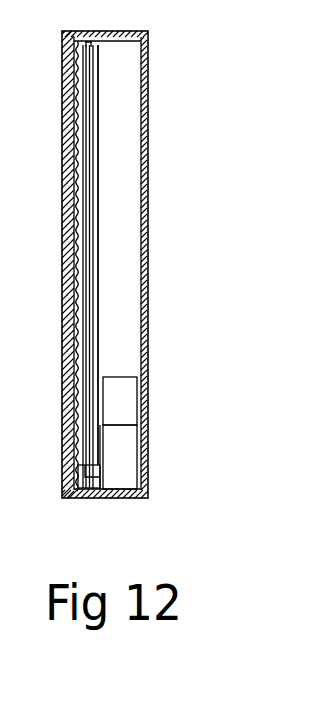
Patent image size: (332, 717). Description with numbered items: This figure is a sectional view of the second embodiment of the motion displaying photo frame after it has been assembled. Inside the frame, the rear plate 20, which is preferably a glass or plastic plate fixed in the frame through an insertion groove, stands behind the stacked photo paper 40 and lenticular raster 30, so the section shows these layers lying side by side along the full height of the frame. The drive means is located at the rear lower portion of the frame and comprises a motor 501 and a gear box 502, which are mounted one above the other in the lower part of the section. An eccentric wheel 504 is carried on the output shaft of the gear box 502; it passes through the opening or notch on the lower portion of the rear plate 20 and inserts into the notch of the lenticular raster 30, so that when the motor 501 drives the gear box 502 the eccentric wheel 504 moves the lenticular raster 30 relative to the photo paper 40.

The lenticular raster 30 is at (78, 55).
The photo paper 40 is at (93, 118).
The rear plate 20 is at (97, 148).
The motor 501 is at (127, 399).
The gear box 502 is at (127, 445).
The eccentric wheel 504 is at (88, 498).